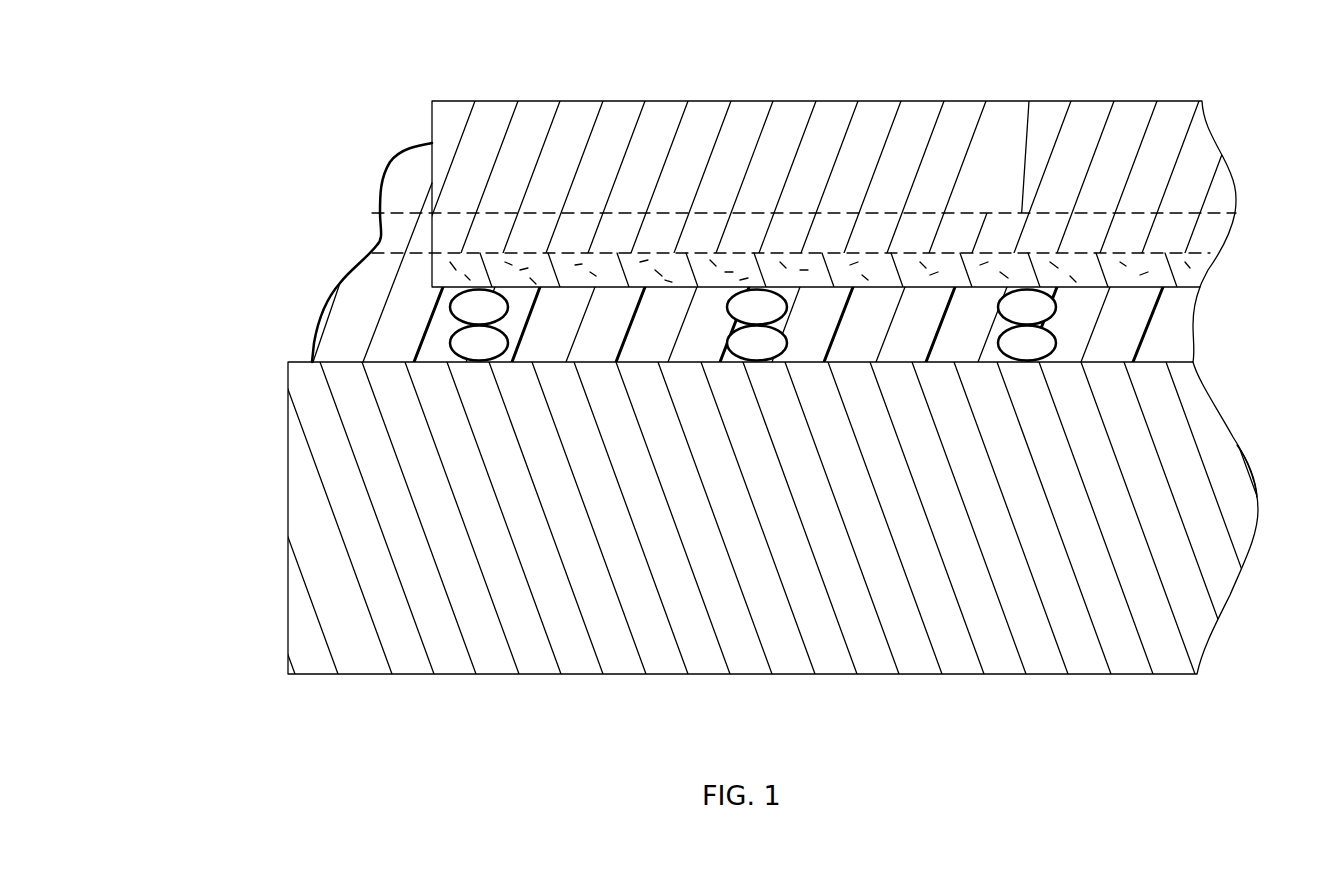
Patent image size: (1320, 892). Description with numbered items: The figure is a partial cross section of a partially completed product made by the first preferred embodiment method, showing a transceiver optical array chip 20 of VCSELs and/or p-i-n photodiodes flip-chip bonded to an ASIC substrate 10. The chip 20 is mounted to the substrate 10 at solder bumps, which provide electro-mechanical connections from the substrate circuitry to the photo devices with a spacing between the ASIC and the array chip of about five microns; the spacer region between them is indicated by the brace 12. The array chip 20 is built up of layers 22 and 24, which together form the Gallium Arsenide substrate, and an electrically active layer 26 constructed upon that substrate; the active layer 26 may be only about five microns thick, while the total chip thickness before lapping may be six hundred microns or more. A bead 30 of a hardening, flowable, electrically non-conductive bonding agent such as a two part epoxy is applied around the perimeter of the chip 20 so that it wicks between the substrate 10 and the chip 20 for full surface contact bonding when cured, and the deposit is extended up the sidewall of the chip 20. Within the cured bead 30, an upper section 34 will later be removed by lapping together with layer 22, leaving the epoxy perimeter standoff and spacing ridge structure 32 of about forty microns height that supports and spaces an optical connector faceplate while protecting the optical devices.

The ASIC substrate 10 is at (288, 510).
The spacer layer 12 is at (1208, 287).
The optical array chip 20 is at (840, 451).
The layer 22 is at (1250, 103).
The layer 24 is at (1250, 215).
The electrically active layer 26 is at (1250, 255).
The bead 30 is at (312, 252).
The epoxy perimeter standoff structure 32 is at (260, 360).
The section 34 is at (380, 180).